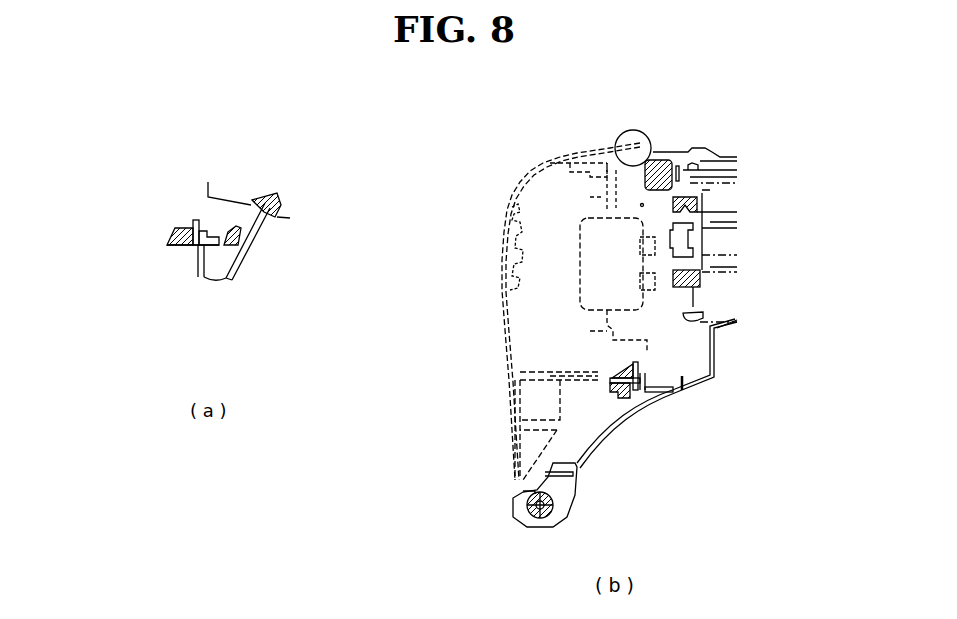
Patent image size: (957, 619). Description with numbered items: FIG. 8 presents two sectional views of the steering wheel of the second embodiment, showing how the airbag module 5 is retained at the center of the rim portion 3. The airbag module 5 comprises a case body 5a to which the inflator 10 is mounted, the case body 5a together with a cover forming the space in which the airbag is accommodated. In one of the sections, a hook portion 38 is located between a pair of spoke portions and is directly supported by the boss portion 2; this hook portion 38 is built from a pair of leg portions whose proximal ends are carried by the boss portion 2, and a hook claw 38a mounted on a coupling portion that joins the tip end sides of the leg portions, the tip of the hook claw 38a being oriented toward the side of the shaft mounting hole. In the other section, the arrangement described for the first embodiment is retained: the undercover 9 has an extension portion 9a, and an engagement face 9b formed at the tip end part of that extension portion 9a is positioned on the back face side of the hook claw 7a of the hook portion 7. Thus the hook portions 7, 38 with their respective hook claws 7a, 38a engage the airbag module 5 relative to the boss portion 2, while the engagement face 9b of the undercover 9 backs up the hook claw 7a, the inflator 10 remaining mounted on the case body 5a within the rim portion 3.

The boss portion 2 is at (703, 283).
The rim portion 3 is at (540, 503).
The airbag module 5 is at (465, 370).
The case body 5a is at (523, 178).
The hook portion 7 is at (177, 225).
The hook claw 7a is at (180, 236).
The undercover 9 is at (242, 258).
The extension portion 9a is at (200, 268).
The engagement face 9b is at (172, 247).
The inflator 10 is at (623, 218).
The hook portion 38 is at (620, 373).
The hook claw 38a is at (622, 371).